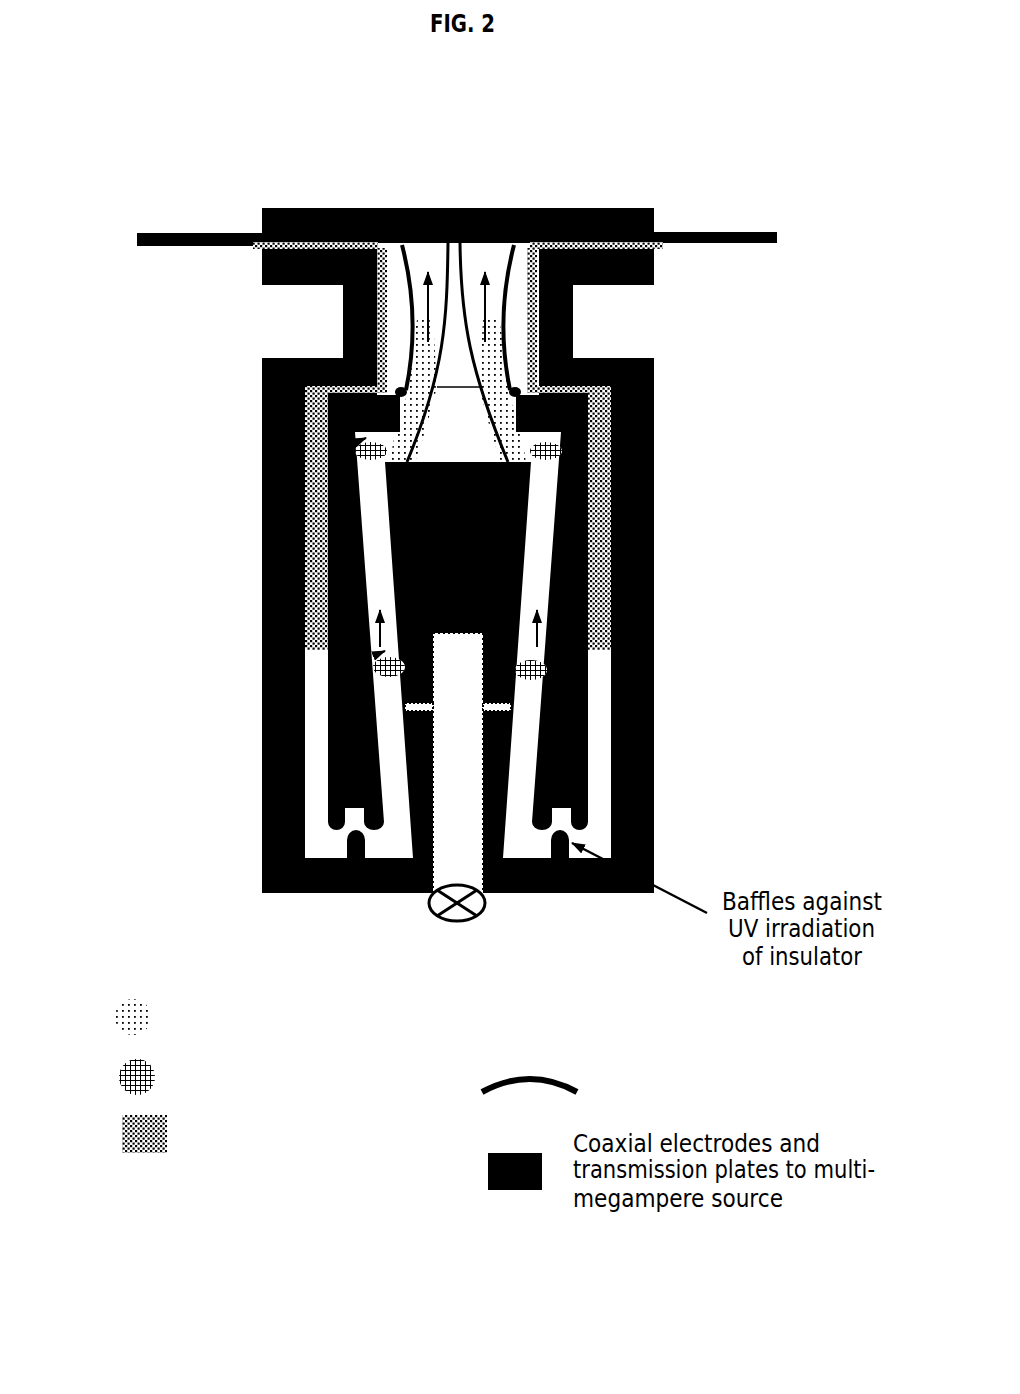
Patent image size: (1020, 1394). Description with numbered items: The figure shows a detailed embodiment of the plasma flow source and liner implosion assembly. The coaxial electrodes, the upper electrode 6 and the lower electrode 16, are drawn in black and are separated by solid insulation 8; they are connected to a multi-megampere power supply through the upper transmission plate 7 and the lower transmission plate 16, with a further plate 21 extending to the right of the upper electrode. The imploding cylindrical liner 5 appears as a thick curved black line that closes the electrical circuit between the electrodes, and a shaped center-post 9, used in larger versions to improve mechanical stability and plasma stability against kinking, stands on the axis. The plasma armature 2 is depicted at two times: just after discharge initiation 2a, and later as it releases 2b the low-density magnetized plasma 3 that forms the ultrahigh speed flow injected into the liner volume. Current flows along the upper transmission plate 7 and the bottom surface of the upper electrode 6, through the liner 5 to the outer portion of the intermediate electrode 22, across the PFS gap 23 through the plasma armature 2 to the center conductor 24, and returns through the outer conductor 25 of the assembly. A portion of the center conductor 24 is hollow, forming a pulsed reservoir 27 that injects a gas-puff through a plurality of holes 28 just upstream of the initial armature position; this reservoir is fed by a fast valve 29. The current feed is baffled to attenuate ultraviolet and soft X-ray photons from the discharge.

The plasma armature 2 is at (340, 766).
The plasma armature just after discharge initiation 2a is at (328, 640).
The plasma armature releasing magnetized plasma 2b is at (328, 430).
The magnetized plasma 3 is at (492, 375).
The cylindrical liner 5 is at (410, 325).
The upper electrode 6 is at (575, 205).
The upper transmission plate 7 is at (202, 232).
The insulation 8 is at (603, 547).
The center-post 9 is at (458, 358).
The lower electrode 16 is at (262, 263).
The transmission plate 21 is at (653, 217).
The intermediate electrode 22 is at (588, 750).
The PFS gap 23 is at (535, 577).
The center conductor 24 is at (530, 530).
The outer conductor 25 is at (655, 808).
The pulsed reservoir 27 is at (530, 893).
The holes 28 is at (404, 710).
The fast valve 29 is at (428, 910).